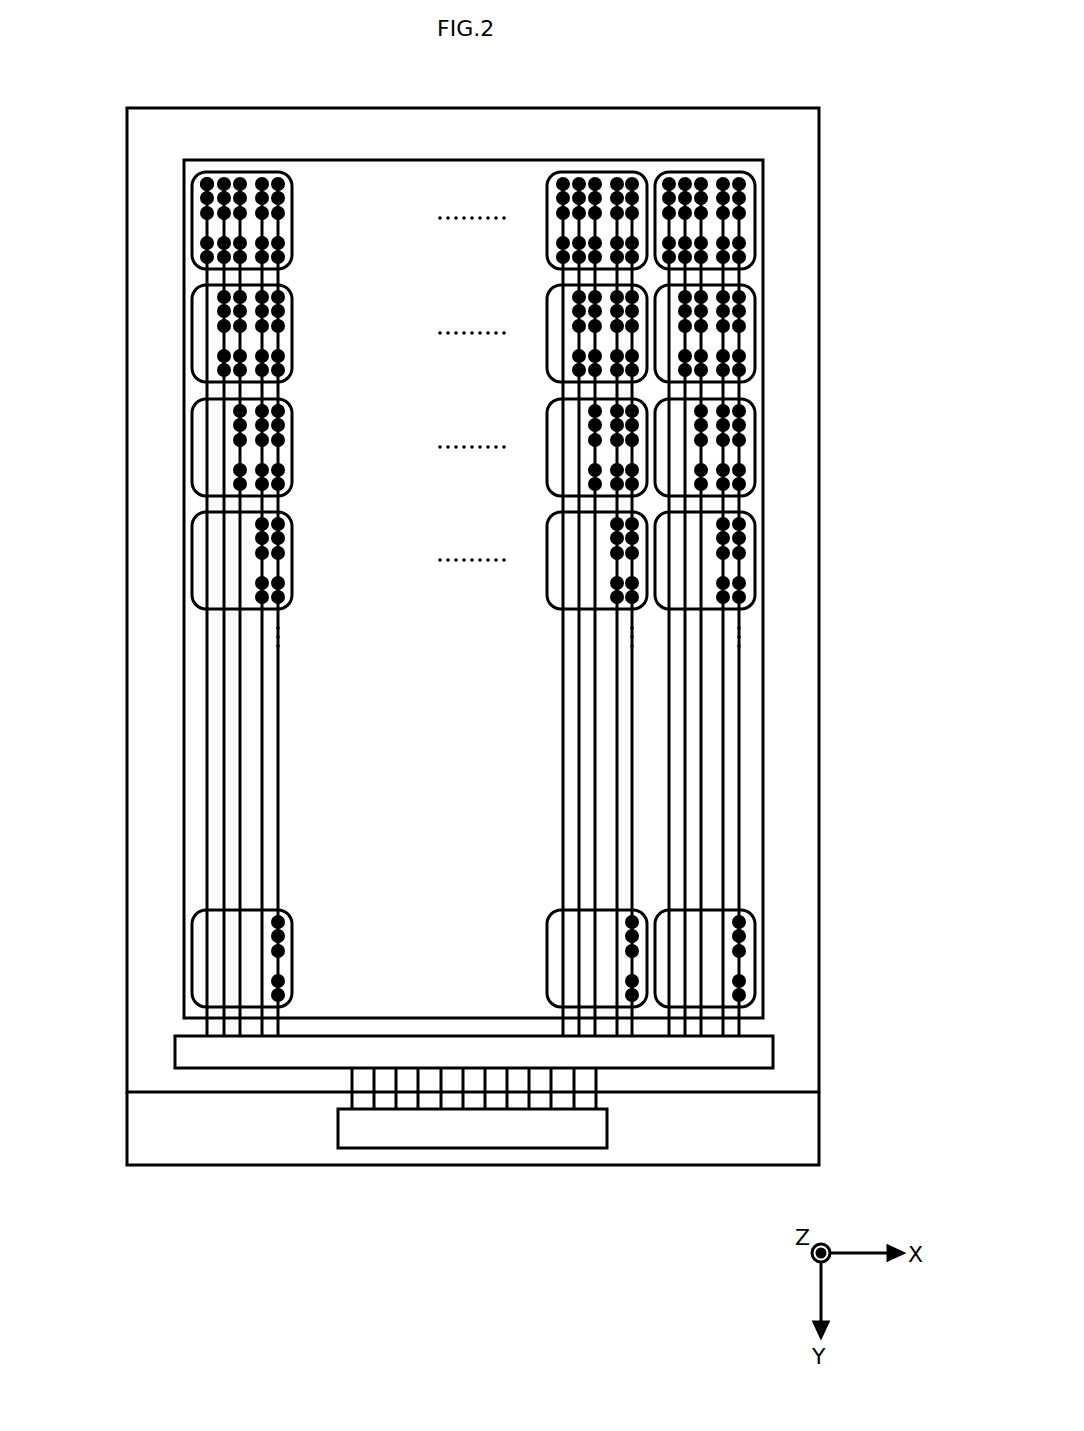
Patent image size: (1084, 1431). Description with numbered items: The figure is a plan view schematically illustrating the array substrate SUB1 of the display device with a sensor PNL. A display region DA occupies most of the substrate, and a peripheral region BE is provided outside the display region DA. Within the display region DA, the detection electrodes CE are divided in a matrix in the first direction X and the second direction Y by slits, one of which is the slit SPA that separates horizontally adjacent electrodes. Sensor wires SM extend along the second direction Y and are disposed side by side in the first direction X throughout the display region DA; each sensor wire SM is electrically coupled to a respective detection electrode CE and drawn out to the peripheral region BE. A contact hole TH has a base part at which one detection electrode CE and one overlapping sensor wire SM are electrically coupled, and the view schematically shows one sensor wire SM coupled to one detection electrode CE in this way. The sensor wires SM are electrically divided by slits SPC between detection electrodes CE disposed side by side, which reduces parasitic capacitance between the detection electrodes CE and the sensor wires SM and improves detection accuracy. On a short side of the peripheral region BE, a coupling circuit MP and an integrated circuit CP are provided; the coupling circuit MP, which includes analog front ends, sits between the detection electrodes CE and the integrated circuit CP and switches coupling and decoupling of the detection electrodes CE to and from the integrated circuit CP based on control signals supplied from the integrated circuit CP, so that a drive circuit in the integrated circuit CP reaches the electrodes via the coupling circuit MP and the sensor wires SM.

The contact hole TH is at (205, 178).
The display region DA is at (473, 178).
The peripheral region BE is at (597, 118).
The slit SPA is at (651, 174).
The slit SPC is at (295, 278).
The detection electrode CE is at (190, 330).
The sensor wire SM is at (206, 760).
The display device with a sensor PNL is at (852, 708).
The array substrate SUB1 is at (807, 1126).
The integrated circuit CP is at (525, 1148).
The coupling circuit MP is at (675, 1068).